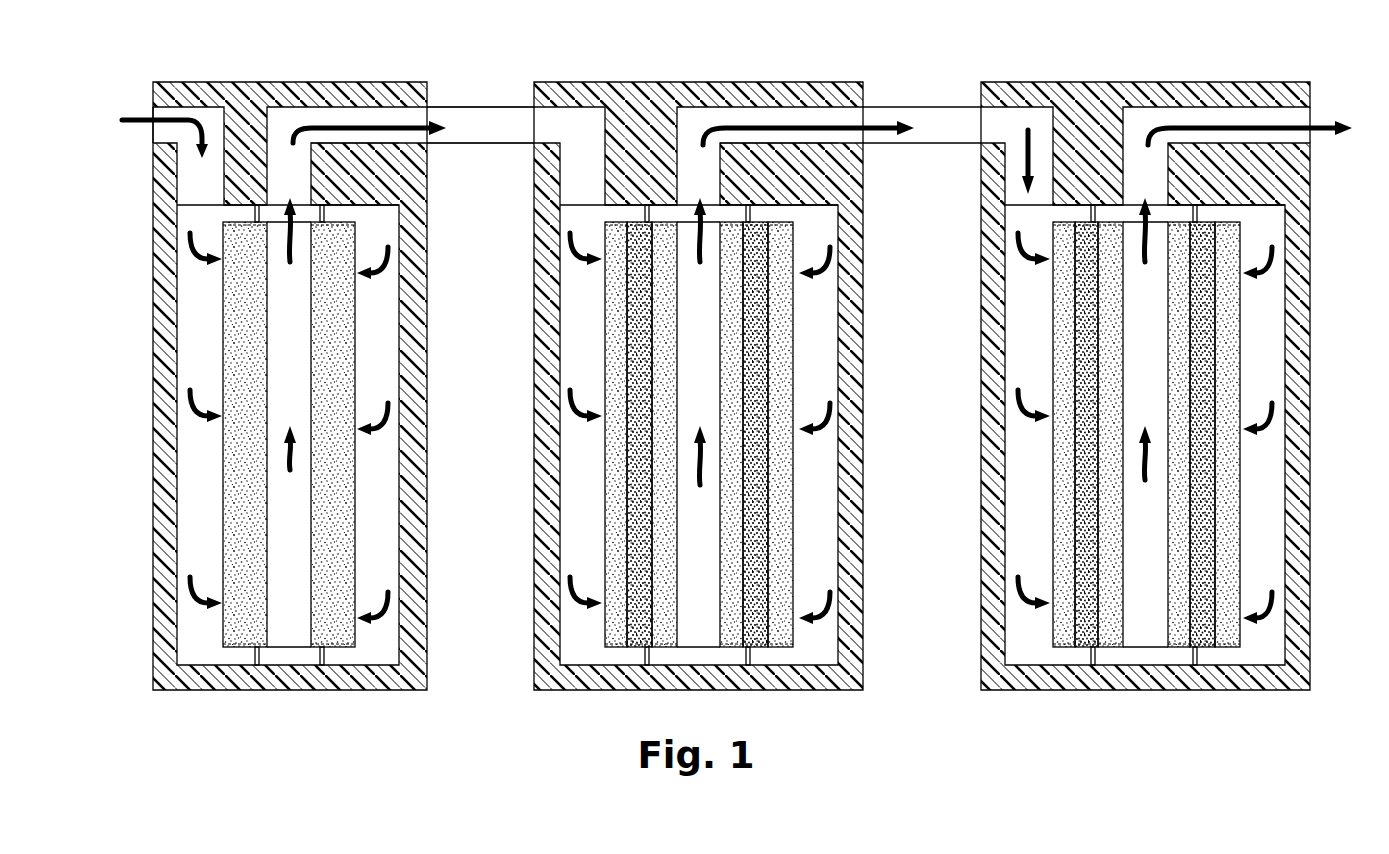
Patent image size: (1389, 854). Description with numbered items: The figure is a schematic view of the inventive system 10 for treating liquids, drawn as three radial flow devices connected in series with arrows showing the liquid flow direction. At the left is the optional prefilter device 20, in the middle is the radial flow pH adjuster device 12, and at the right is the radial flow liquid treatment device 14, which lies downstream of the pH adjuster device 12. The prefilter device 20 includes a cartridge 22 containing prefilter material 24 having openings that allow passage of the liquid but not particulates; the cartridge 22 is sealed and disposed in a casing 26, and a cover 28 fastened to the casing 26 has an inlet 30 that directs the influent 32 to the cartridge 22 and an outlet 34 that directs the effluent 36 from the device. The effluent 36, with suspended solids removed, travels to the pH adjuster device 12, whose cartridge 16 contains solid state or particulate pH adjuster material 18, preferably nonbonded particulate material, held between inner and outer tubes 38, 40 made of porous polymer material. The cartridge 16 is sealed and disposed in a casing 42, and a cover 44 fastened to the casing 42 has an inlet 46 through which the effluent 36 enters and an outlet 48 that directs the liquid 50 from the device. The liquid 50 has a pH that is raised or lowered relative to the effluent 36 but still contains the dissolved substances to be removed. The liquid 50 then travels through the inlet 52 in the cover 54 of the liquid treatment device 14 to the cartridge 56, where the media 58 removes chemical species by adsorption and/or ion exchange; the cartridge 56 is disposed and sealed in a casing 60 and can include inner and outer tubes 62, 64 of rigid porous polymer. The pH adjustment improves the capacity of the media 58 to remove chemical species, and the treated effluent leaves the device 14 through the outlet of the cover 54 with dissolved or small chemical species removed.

The system 10 is at (612, 26).
The radial flow pH adjuster device 12 is at (493, 337).
The radial flow liquid treatment device 14 is at (941, 376).
The cartridge 16 is at (808, 491).
The pH adjuster material 18 is at (645, 488).
The prefilter device 20 is at (92, 292).
The cartridge 22 is at (384, 484).
The prefilter material 24 is at (332, 390).
The casing 26 is at (153, 397).
The cover 28 is at (234, 90).
The inlet 30 is at (153, 110).
The influent 32 is at (125, 121).
The outlet 34 is at (355, 110).
The effluent 36 is at (420, 122).
The inner tube 38 is at (733, 313).
The outer tube 40 is at (778, 335).
The casing 42 is at (850, 532).
The cover 44 is at (638, 81).
The inlet 46 is at (547, 141).
The outlet 48 is at (830, 142).
The liquid 50 is at (878, 125).
The inlet 52 is at (1015, 108).
The cover 54 is at (1133, 82).
The cartridge 56 is at (1262, 462).
The media 58 is at (1200, 355).
The casing 60 is at (1310, 245).
The inner tube 62 is at (1303, 121).
The outer tube 64 is at (1290, 137).